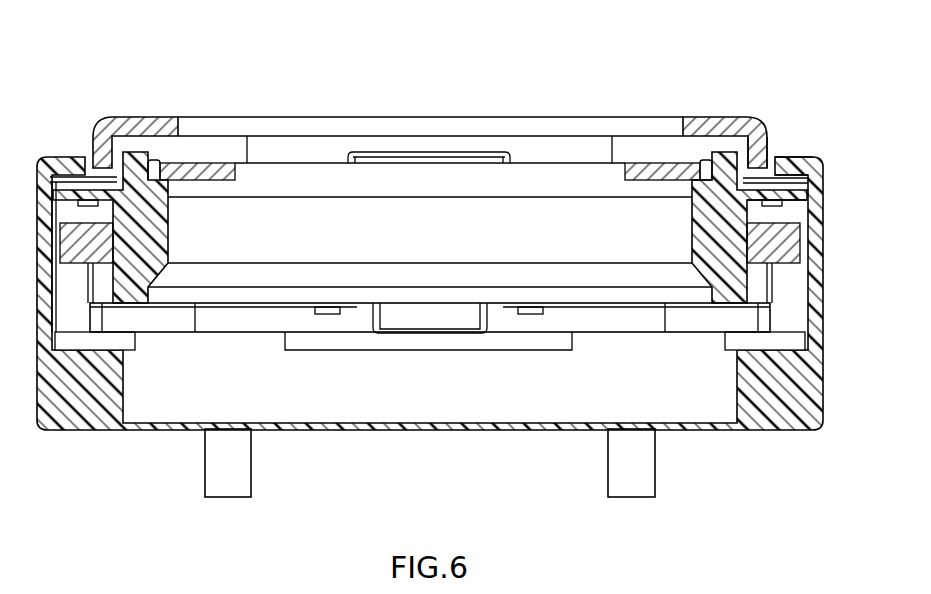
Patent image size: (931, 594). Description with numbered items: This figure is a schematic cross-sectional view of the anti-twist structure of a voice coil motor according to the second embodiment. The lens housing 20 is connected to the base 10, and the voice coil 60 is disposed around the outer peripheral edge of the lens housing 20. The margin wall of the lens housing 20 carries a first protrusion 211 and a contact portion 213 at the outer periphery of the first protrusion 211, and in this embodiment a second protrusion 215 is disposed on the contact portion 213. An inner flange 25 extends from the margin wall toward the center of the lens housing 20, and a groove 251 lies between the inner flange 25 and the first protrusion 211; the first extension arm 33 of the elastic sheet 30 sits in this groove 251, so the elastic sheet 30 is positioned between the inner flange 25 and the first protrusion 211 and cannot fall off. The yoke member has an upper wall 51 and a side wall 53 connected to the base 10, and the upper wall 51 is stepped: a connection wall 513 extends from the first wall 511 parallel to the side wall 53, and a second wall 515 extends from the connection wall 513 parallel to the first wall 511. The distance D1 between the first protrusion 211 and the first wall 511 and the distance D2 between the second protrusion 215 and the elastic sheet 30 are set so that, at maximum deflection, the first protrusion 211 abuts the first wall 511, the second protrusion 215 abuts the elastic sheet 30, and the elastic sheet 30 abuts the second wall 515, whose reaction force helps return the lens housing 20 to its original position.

The base 10 is at (792, 392).
The lens housing 20 is at (474, 182).
The first protrusion 211 is at (86, 200).
The contact portion 213 is at (792, 204).
The second protrusion 215 is at (795, 180).
The inner flange 25 is at (184, 170).
The groove 251 is at (158, 162).
The elastic sheet 30 is at (63, 176).
The first extension arm 33 is at (666, 178).
The upper wall 51 is at (461, 97).
The first wall 511 is at (688, 117).
The connection wall 513 is at (757, 117).
The second wall 515 is at (800, 118).
The side wall 53 is at (790, 348).
The voice coil 60 is at (790, 243).
The distance between first protrusion and first wall D1 is at (138, 164).
The distance between second protrusion and elastic sheet D2 is at (87, 215).